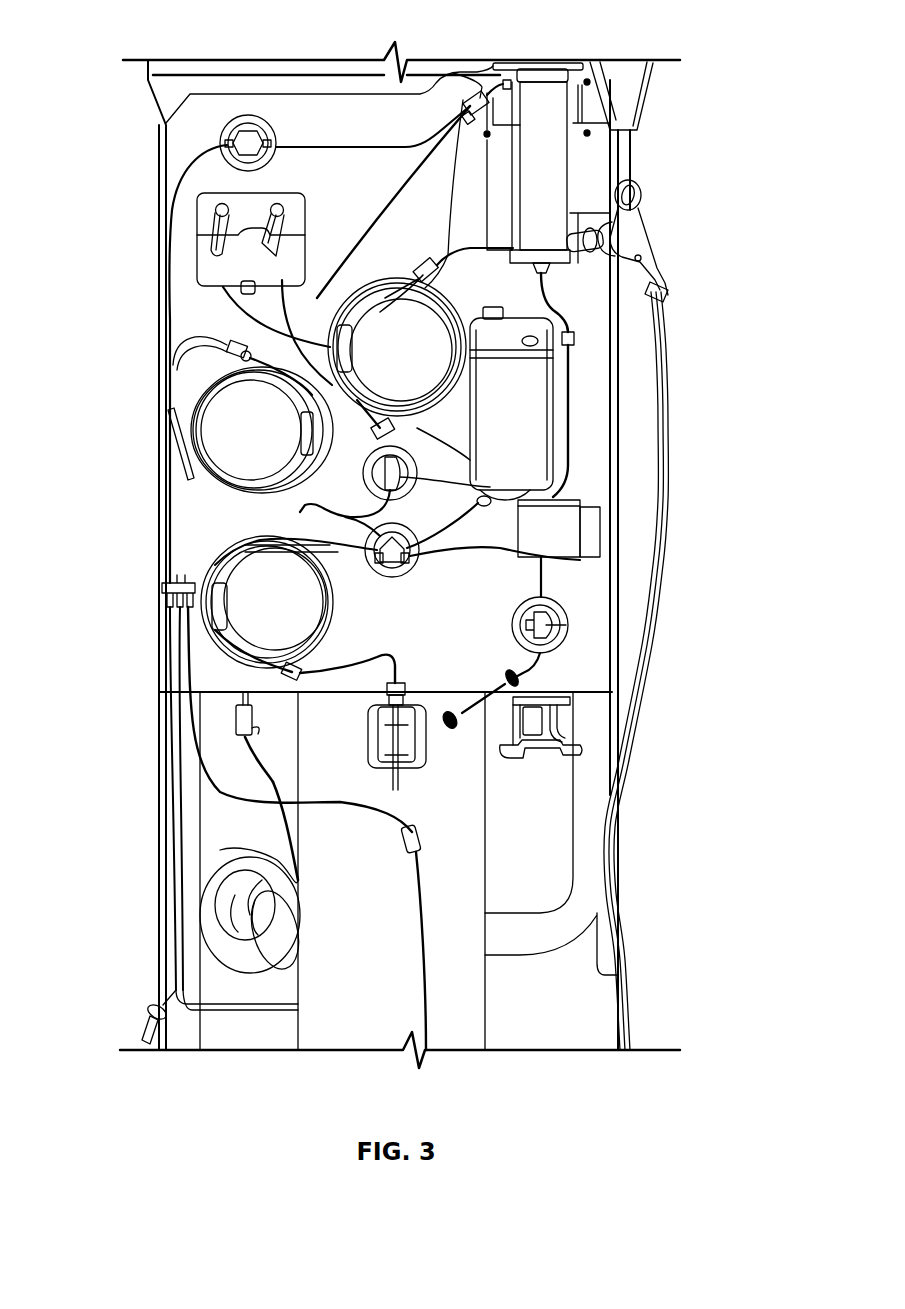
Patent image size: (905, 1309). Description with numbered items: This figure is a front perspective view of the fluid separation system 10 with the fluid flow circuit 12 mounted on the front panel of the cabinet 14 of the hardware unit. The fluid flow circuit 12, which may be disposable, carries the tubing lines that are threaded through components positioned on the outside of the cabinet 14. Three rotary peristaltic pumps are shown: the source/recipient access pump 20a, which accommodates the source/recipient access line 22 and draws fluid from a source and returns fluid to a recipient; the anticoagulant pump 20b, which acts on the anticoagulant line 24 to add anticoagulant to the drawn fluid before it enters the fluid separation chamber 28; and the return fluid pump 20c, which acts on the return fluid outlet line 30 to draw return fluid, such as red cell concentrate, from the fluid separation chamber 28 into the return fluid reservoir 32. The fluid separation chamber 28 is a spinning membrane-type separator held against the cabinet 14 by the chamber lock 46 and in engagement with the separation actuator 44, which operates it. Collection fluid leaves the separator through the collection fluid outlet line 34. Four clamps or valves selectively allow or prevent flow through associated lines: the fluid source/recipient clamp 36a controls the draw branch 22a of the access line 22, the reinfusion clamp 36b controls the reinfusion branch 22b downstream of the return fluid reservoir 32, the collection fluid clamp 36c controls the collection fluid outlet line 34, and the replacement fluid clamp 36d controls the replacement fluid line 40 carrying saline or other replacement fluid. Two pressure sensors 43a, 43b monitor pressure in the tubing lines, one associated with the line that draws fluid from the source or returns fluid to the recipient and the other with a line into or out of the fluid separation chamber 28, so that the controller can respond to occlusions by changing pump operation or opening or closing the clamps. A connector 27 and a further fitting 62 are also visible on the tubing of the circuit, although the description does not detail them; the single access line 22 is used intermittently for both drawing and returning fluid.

The fluid separation system 10 is at (316, 996).
The fluid flow circuit 12 is at (195, 152).
The cabinet 14 is at (430, 631).
The source/recipient access pump 20a is at (243, 590).
The anticoagulant pump 20b is at (237, 430).
The return fluid pump 20c is at (380, 345).
The source/recipient access line 22 is at (420, 806).
The draw branch 22a is at (370, 206).
The reinfusion branch 22b is at (580, 561).
The anticoagulant line 24 is at (227, 795).
The tubing connector 27 is at (237, 730).
The fluid separation chamber 28 is at (550, 146).
The return fluid outlet line 30 is at (471, 98).
The return fluid reservoir 32 is at (515, 430).
The collection fluid outlet line 34 is at (572, 403).
The fluid source/recipient clamp 36a is at (520, 498).
The reinfusion clamp 36b is at (372, 483).
The collection fluid clamp 36c is at (566, 624).
The replacement fluid clamp 36d is at (247, 135).
The replacement fluid line 40 is at (387, 148).
The pressure sensor 43a is at (216, 212).
The pressure sensor 43b is at (276, 210).
The separation actuator 44 is at (584, 62).
The chamber lock 46 is at (650, 272).
The connector block 62 is at (412, 738).